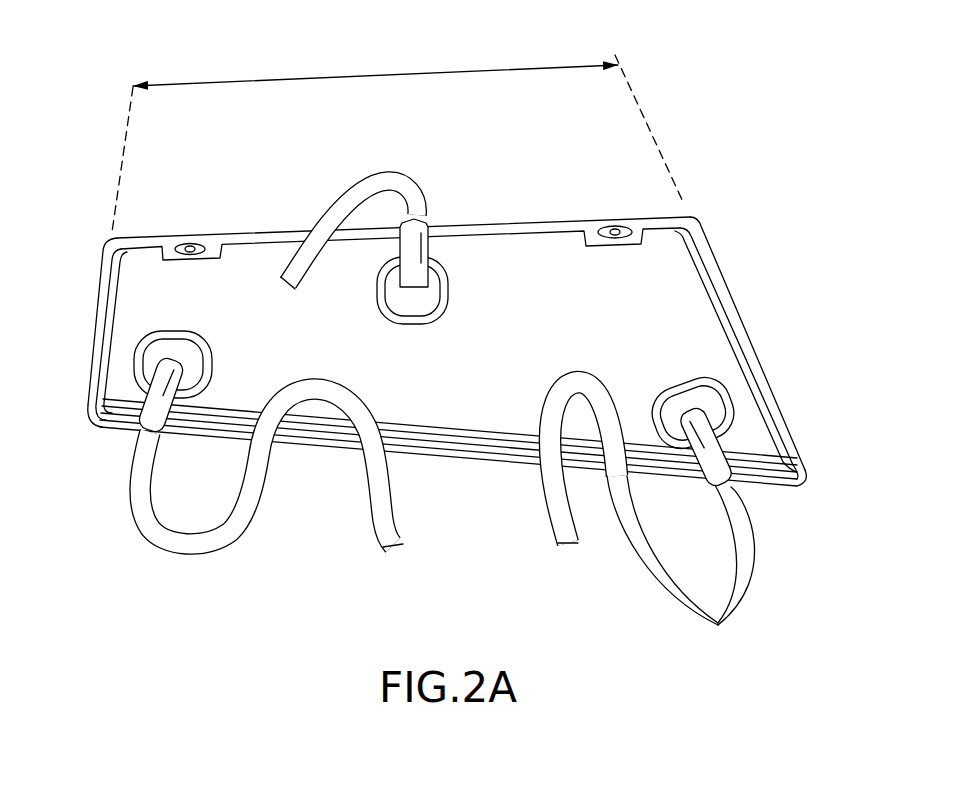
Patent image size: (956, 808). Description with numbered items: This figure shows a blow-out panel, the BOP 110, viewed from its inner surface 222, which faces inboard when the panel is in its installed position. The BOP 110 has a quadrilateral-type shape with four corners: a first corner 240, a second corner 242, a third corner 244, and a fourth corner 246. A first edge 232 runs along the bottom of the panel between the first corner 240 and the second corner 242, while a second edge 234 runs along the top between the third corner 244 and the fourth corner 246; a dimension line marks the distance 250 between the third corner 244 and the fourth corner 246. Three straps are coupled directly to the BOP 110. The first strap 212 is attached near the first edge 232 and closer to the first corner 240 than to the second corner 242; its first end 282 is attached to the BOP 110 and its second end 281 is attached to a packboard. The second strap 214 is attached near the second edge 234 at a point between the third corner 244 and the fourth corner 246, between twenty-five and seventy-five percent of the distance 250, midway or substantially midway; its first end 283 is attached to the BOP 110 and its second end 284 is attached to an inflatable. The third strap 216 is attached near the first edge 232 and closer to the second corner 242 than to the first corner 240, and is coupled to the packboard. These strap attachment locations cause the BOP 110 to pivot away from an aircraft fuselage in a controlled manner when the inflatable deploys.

The blow-out panel (BOP) 110 is at (438, 337).
The first strap 212 is at (200, 549).
The second strap 214 is at (320, 213).
The third strap 216 is at (647, 570).
The inner surface 222 is at (571, 308).
The first edge 232 is at (457, 469).
The second edge 234 is at (460, 214).
The first corner 240 is at (98, 421).
The second corner 242 is at (798, 468).
The third corner 244 is at (110, 252).
The fourth corner 246 is at (685, 213).
The distance 250 is at (349, 78).
The second end 281 is at (372, 543).
The first end 282 is at (199, 364).
The first end 283 is at (432, 297).
The second end 284 is at (278, 282).